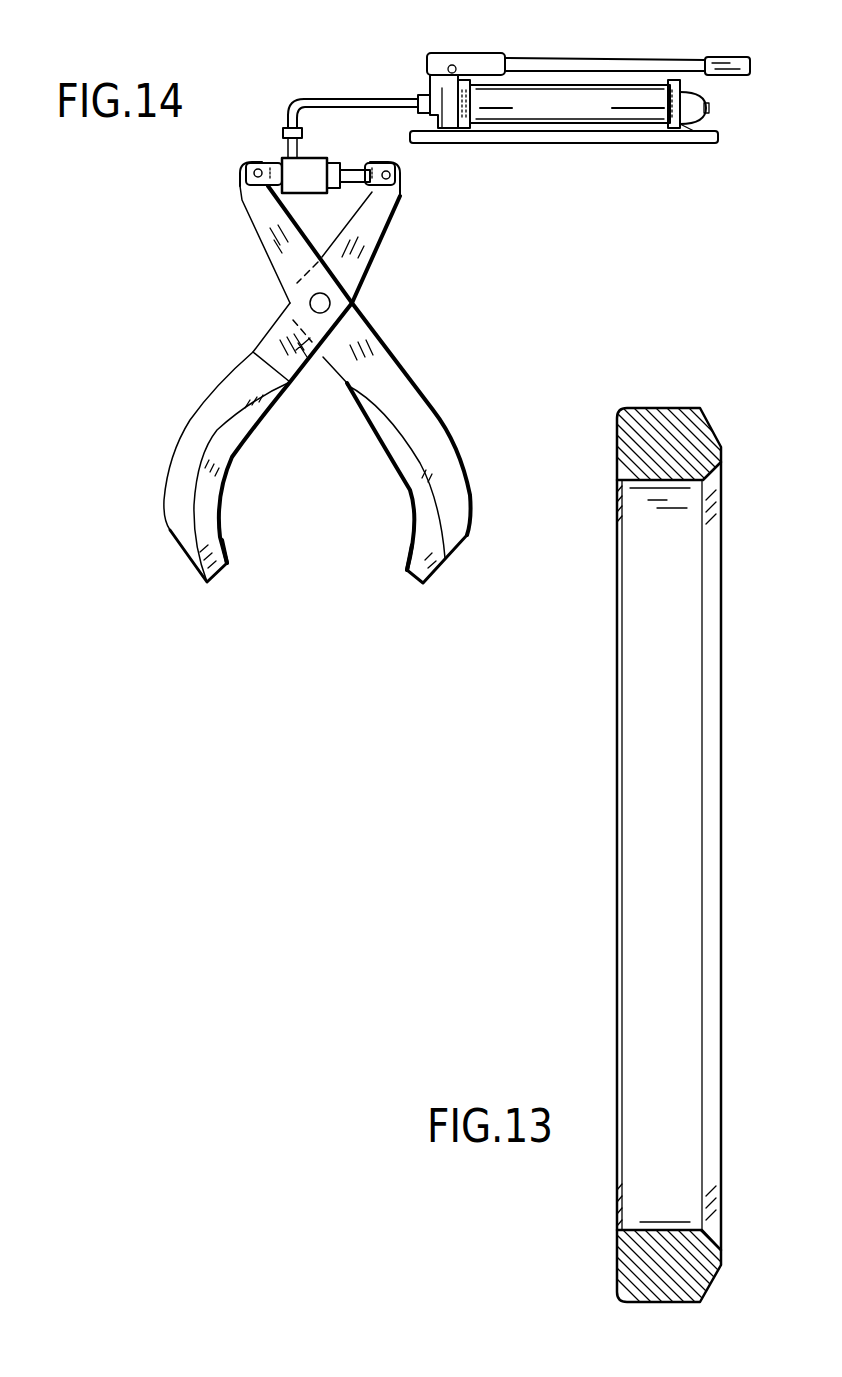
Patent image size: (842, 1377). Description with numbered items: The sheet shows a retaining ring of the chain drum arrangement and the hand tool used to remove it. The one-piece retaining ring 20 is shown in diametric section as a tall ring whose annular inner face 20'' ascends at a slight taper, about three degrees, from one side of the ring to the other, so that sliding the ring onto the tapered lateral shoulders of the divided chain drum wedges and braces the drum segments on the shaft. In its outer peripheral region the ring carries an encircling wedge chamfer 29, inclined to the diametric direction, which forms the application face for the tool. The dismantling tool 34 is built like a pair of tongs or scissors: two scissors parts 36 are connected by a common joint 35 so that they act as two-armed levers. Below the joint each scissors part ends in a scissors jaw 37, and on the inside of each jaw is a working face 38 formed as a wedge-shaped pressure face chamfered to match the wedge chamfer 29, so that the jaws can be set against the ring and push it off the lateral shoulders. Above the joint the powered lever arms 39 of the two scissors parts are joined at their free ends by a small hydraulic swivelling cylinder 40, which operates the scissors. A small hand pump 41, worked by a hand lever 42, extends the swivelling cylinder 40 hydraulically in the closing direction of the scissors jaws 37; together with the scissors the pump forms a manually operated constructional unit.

In FIG. 13, the retaining ring 20 is at (693, 856).
In FIG. 13, the annular inner face 20'' is at (663, 858).
In FIG. 13, the wedge chamfer 29 is at (710, 426).
In FIG. 14, the dismantling tool 34 is at (168, 449).
In FIG. 14, the common joint 35 is at (310, 303).
In FIG. 14, the scissors parts 36 is at (260, 367).
In FIG. 14, the scissors jaws 37 is at (190, 550).
In FIG. 14, the working face 38 is at (223, 551).
In FIG. 14, the powered lever arms 39 is at (270, 238).
In FIG. 14, the hydraulic swivelling cylinder 40 is at (364, 98).
In FIG. 14, the hand pump 41 is at (575, 108).
In FIG. 14, the hand lever 42 is at (670, 67).